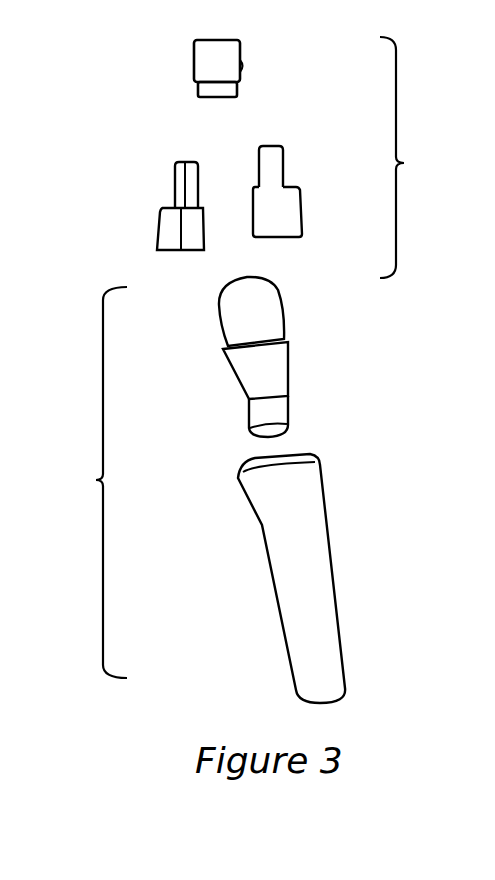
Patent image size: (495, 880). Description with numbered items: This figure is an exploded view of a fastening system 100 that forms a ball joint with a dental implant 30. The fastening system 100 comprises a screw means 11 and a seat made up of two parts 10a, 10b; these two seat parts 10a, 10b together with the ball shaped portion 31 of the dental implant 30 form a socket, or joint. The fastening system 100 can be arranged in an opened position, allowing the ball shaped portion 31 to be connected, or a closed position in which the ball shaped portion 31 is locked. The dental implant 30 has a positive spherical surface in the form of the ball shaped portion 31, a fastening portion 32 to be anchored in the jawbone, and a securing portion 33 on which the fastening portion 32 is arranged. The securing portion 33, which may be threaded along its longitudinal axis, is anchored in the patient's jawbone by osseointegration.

The screw means 11 is at (193, 68).
The first part of the seat 10a is at (158, 228).
The second part of the seat 10b is at (300, 219).
The fastening system 100 is at (418, 157).
The dental implant 30 is at (91, 482).
The ball shaped portion 31 is at (217, 313).
The fastening portion 32 is at (290, 405).
The securing portion 33 is at (313, 578).